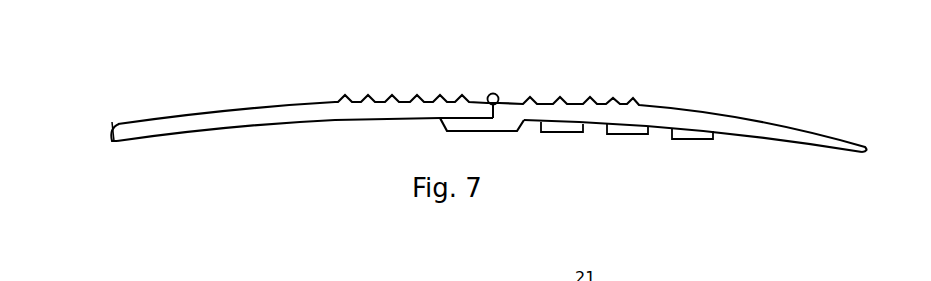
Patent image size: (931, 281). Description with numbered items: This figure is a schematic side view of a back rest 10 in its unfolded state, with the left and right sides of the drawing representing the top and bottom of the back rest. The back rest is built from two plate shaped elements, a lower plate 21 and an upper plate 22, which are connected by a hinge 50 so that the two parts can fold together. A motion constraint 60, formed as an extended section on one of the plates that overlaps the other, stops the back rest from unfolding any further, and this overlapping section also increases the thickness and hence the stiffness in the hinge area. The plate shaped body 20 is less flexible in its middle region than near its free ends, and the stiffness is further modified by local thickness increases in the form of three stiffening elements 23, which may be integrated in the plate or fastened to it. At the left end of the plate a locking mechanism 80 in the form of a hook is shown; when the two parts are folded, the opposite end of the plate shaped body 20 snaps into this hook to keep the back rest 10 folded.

The back rest 10 is at (180, 58).
The plate shaped body 20 is at (700, 92).
The lower plate 21 is at (275, 112).
The upper plate 22 is at (675, 122).
The stiffening elements 23 is at (630, 137).
The hinge 50 is at (499, 92).
The motion constraint 60 is at (484, 126).
The locking mechanism 80 is at (102, 143).